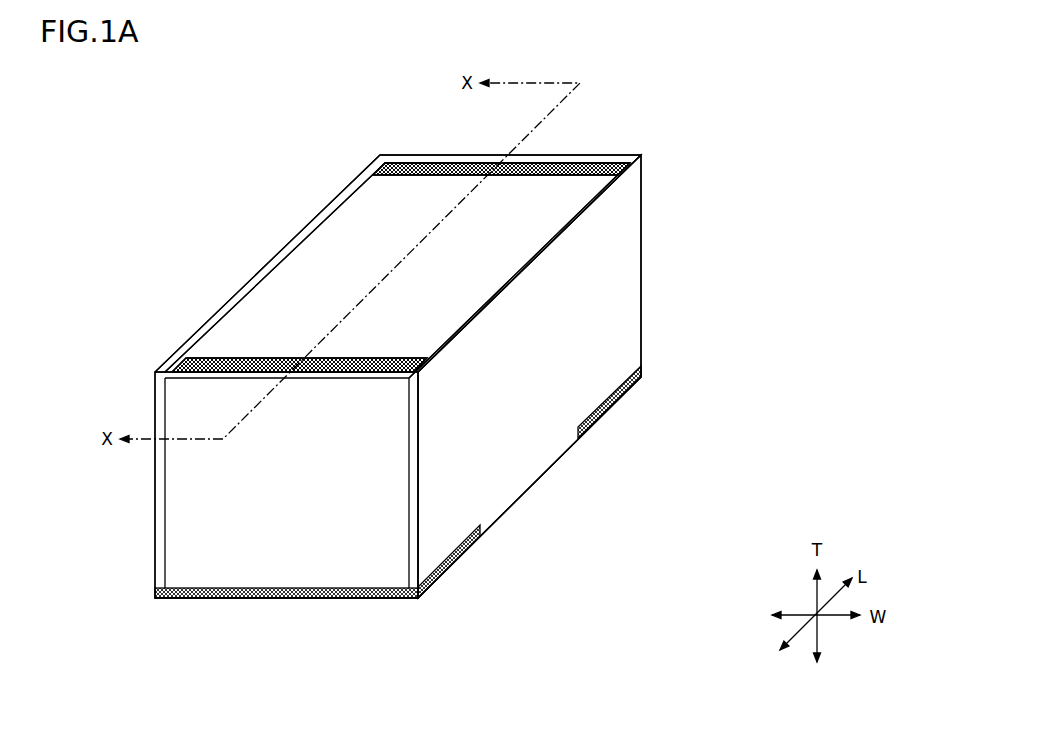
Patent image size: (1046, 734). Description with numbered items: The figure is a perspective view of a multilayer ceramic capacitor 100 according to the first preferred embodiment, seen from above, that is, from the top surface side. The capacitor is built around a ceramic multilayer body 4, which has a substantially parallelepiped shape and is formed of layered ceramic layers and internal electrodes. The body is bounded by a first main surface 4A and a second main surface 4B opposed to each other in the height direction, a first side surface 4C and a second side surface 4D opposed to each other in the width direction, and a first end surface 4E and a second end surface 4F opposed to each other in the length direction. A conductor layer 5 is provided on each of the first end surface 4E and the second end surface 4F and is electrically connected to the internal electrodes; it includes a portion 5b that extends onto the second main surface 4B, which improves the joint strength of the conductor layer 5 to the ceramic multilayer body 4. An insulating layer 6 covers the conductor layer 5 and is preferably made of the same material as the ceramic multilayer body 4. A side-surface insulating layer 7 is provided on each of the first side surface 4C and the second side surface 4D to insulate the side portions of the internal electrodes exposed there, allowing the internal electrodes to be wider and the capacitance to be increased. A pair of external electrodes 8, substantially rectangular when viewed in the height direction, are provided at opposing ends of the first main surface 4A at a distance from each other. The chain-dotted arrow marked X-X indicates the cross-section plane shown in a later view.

The multilayer ceramic capacitor 100 is at (159, 116).
The ceramic multilayer body 4 is at (372, 208).
The first main surface 4A is at (535, 505).
The second main surface 4B is at (372, 263).
The first side surface 4C is at (540, 378).
The second side surface 4D is at (240, 267).
The first end surface 4E is at (273, 483).
The second end surface 4F is at (540, 148).
The conductor layer 5 is at (430, 172).
The portion extending to second main surface 5b is at (477, 174).
The insulating layer 6 is at (412, 160).
The side-surface insulating layer 7 is at (298, 237).
The external electrode 8 is at (297, 600).